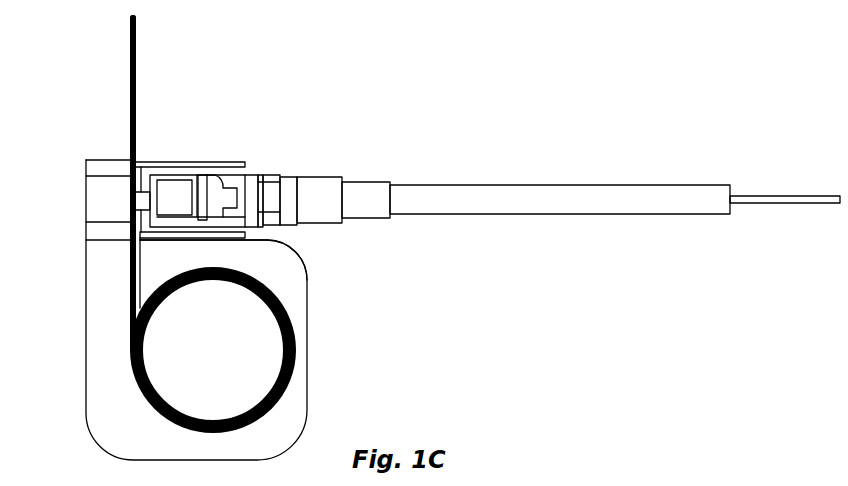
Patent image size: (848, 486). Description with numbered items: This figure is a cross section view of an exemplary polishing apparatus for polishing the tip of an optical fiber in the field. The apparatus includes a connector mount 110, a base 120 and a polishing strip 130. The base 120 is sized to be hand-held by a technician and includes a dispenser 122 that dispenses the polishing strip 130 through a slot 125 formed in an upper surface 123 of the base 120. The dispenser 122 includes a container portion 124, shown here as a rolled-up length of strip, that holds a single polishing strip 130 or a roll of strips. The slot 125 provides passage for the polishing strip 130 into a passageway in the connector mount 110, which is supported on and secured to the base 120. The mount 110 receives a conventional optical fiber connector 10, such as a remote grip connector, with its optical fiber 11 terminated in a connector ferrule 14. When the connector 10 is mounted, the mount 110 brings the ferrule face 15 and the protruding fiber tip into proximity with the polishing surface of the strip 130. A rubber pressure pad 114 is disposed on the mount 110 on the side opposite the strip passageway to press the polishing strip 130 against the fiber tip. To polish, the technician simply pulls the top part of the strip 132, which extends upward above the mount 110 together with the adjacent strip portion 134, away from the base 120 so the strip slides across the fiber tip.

The optical fiber connector 10 is at (250, 173).
The optical fiber 11 is at (763, 200).
The connector ferrule 14 is at (142, 190).
The ferrule face 15 is at (133, 200).
The connector mount 110 is at (193, 163).
The pressure pad 114 is at (93, 185).
The base 120 is at (311, 387).
The dispenser 122 is at (165, 255).
The upper surface 123 is at (319, 258).
The container portion 124 is at (267, 337).
The slot 125 is at (140, 282).
The polishing strip 130 is at (124, 65).
The top part of the strip 132 is at (137, 40).
The fiber cable lower portion 134 is at (137, 99).